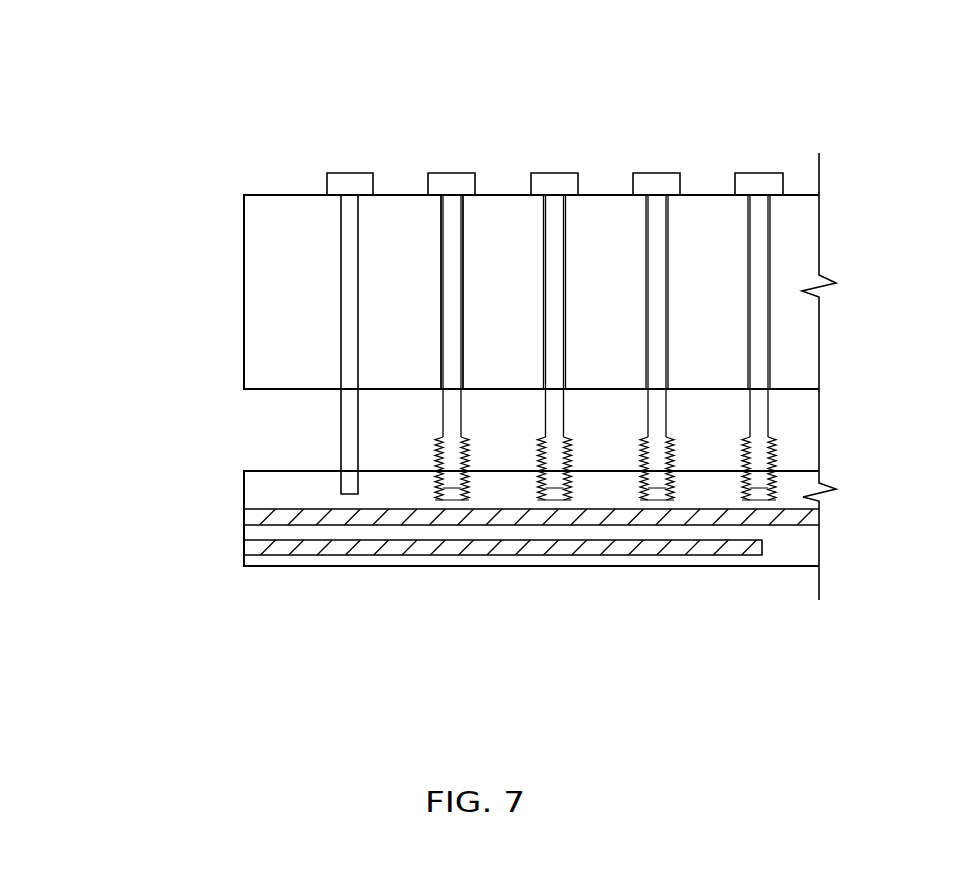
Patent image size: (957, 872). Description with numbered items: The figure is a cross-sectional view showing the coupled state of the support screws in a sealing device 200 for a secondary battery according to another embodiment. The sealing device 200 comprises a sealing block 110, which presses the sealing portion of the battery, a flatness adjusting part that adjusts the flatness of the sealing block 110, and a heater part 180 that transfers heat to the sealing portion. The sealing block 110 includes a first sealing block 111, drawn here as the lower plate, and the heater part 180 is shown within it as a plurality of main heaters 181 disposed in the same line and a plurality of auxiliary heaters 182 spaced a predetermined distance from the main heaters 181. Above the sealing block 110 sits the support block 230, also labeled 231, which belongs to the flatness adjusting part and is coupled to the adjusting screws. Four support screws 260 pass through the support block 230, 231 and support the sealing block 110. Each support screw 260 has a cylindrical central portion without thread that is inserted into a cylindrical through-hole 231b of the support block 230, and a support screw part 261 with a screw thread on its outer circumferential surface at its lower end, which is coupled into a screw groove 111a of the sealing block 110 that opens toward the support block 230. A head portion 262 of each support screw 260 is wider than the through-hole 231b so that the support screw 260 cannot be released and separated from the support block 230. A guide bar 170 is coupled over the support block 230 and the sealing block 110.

The sealing device 200 is at (818, 45).
The head portion 262 is at (438, 181).
The support screw 260 is at (600, 358).
The support screw part 261 is at (457, 474).
The through-hole 231b is at (442, 246).
The guide bar 170 is at (330, 186).
The support block 231 is at (244, 293).
The support block 230 is at (453, 248).
The first sealing block 111 is at (453, 583).
The sealing block 110 is at (453, 583).
The screw groove 111a is at (441, 476).
The heater part 180 is at (531, 608).
The main heater 181 is at (657, 517).
The auxiliary heater 182 is at (595, 548).